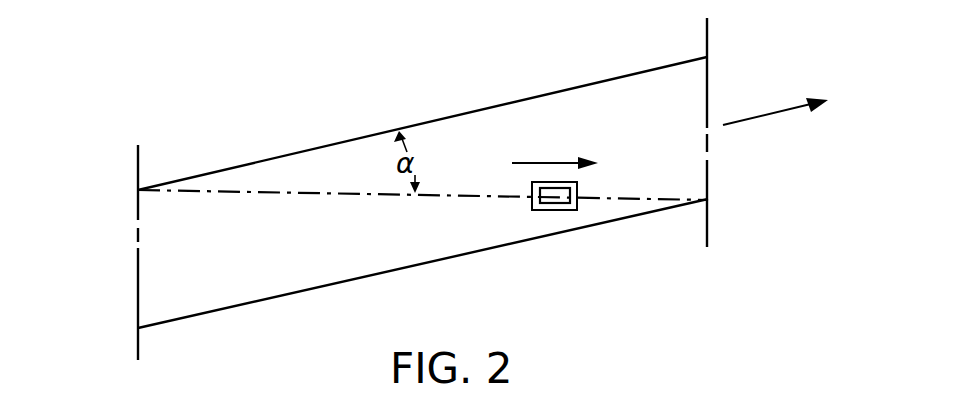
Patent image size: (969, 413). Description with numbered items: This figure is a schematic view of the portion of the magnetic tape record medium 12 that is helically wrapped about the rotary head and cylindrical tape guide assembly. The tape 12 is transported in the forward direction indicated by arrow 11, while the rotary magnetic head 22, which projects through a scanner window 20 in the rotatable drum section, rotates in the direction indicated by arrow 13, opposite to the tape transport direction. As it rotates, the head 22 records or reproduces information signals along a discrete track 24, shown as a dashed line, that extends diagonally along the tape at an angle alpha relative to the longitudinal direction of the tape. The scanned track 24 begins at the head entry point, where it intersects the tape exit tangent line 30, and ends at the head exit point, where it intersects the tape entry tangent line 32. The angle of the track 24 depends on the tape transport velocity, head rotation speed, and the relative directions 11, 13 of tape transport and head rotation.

The arrow indicating forward direction of tape transport 11 is at (766, 114).
The magnetic tape record medium 12 is at (473, 110).
The arrow indicating direction of head rotation 13 is at (537, 163).
The scanner window 20 is at (577, 191).
The rotary magnetic head 22 is at (556, 205).
The recorded track 24 is at (352, 196).
The tape exit tangent line 30 is at (707, 70).
The tape entry tangent line 32 is at (138, 256).